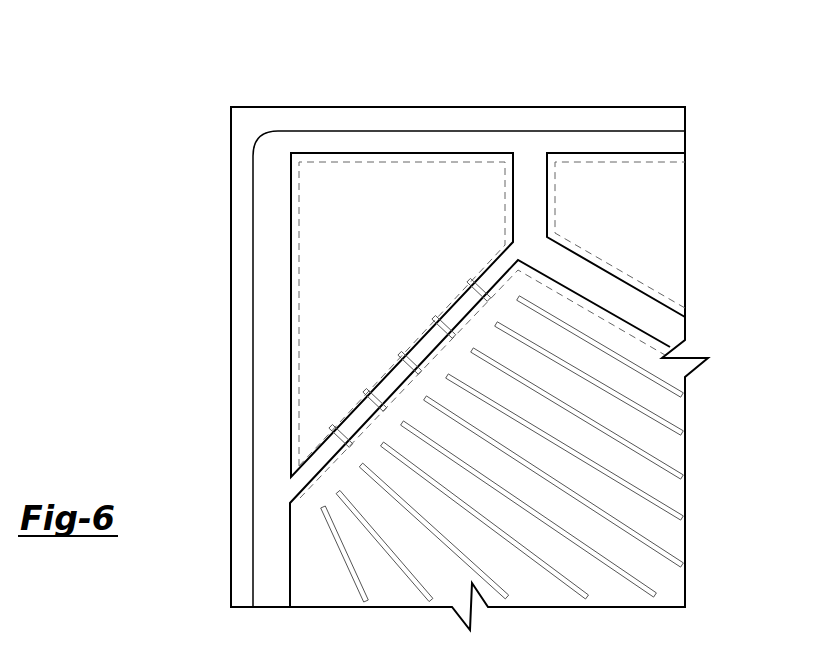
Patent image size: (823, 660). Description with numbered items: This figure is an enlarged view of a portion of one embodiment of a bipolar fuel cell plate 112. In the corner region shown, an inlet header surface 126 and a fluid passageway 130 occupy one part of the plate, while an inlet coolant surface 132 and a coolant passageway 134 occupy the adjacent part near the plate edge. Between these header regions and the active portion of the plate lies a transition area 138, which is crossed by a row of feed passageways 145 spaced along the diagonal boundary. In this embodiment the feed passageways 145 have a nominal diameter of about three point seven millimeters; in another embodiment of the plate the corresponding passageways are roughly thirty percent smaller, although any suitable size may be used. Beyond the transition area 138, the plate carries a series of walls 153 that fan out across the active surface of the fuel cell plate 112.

The fuel cell plate 112 is at (698, 64).
The inlet header surface 126 is at (296, 197).
The fluid passageway 130 is at (384, 160).
The inlet coolant surface 132 is at (582, 155).
The coolant passageway 134 is at (667, 163).
The transition area 138 is at (300, 560).
The feed passageways 145 is at (337, 434).
The walls 153 is at (685, 396).